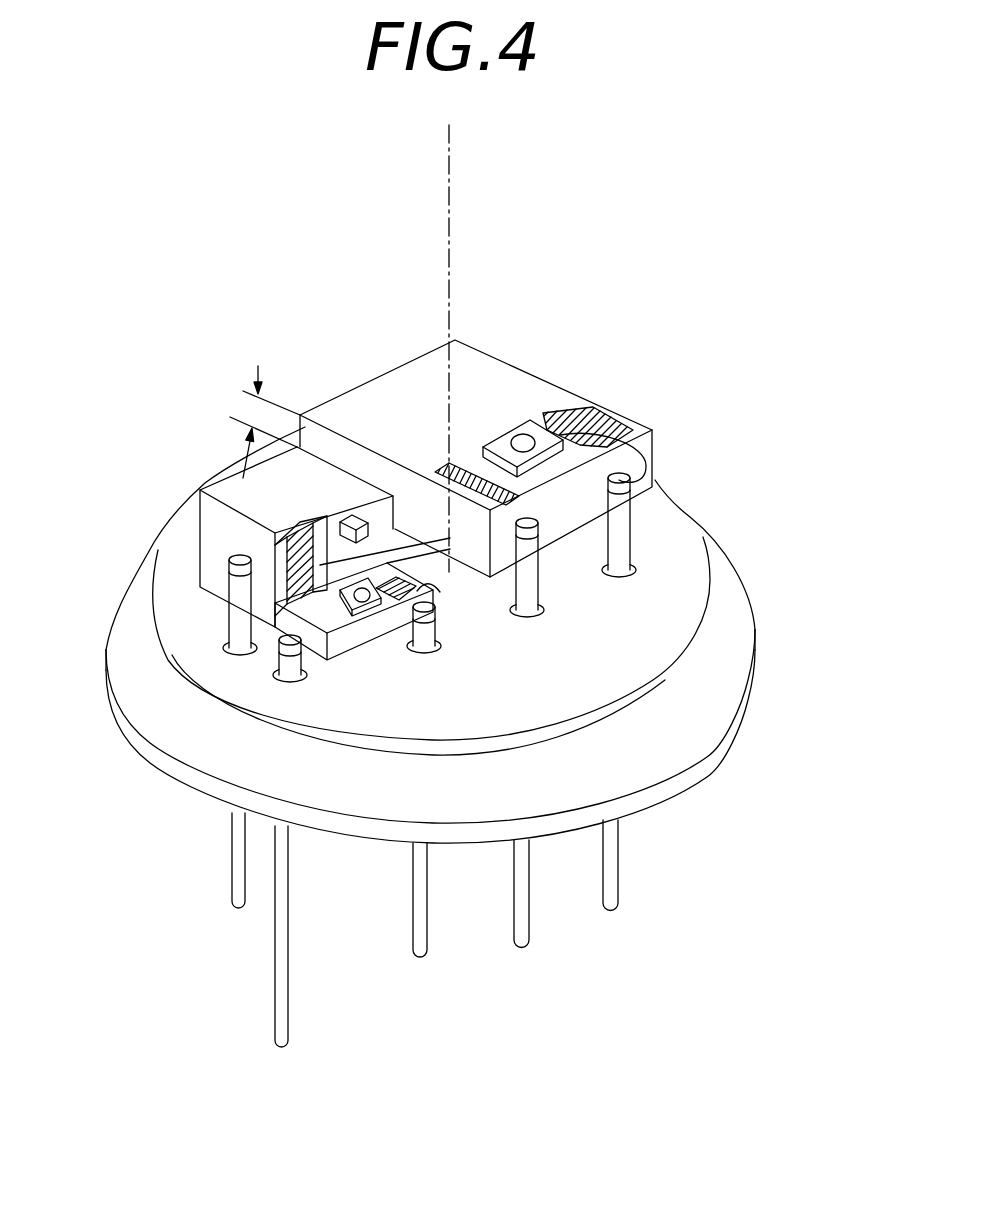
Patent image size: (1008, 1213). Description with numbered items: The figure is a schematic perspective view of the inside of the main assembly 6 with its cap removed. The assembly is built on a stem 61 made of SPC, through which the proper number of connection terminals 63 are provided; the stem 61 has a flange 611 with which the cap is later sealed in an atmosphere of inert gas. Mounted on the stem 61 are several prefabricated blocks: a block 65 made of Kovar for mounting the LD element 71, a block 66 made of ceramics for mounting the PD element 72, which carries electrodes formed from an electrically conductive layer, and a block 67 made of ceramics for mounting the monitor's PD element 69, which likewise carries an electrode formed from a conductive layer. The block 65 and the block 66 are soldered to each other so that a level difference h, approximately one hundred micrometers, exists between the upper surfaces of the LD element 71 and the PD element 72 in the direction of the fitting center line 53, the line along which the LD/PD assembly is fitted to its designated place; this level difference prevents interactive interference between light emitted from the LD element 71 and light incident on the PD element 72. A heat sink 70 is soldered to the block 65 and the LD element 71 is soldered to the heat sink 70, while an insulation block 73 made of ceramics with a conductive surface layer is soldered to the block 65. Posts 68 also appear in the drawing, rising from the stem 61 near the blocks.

The main assembly 6 is at (592, 290).
The fitting center line 53 is at (448, 143).
The stem 61 is at (677, 603).
The flange 611 is at (700, 713).
The connection terminals 63 is at (617, 890).
The block 65 is at (210, 524).
The block 66 is at (498, 395).
The block 67 is at (355, 633).
The terminal posts 68 is at (630, 530).
The monitor PD element 69 is at (363, 597).
The heat sink 70 is at (340, 512).
The LD element 71 is at (367, 530).
The PD element 72 is at (563, 437).
The insulation block 73 is at (283, 578).